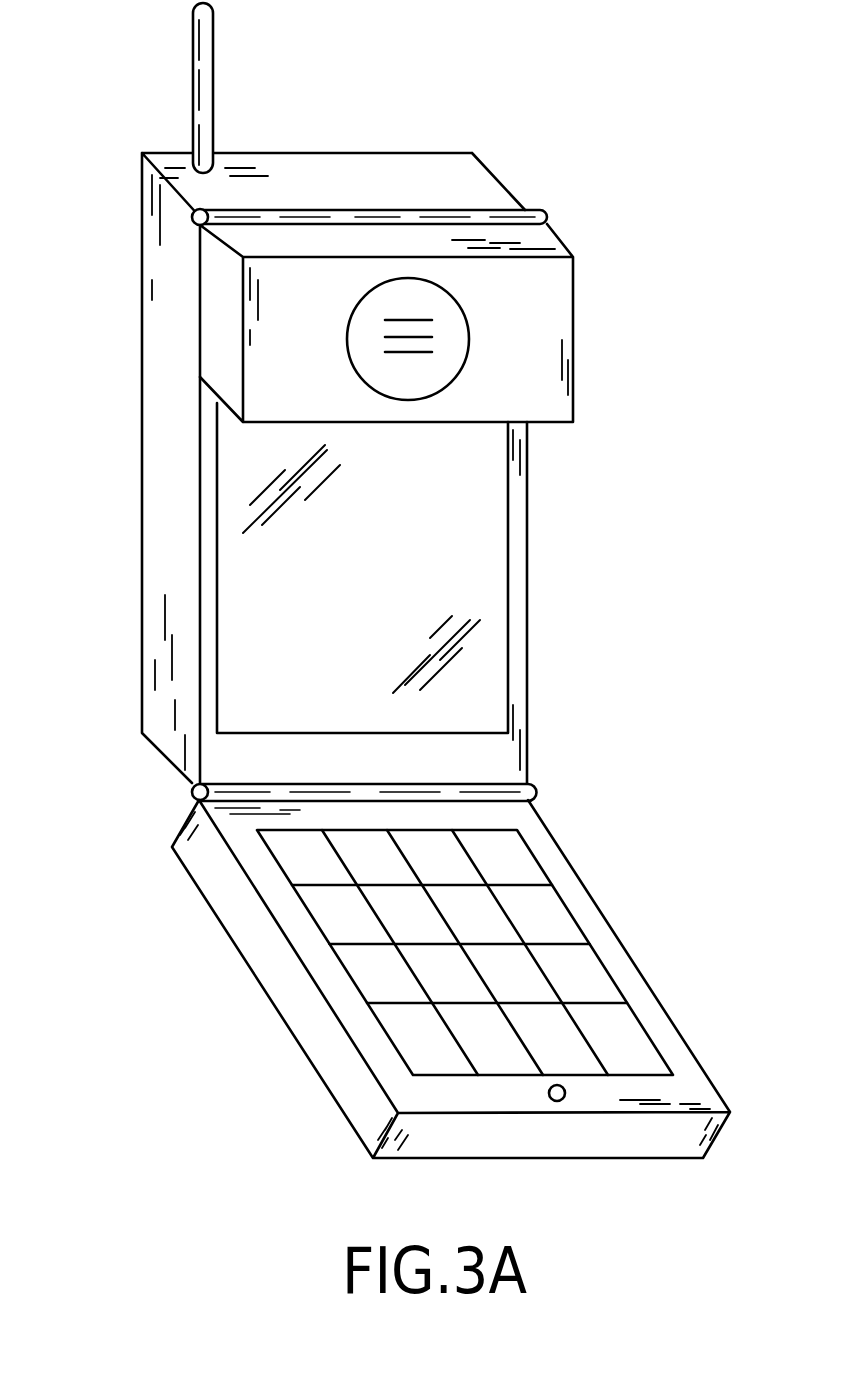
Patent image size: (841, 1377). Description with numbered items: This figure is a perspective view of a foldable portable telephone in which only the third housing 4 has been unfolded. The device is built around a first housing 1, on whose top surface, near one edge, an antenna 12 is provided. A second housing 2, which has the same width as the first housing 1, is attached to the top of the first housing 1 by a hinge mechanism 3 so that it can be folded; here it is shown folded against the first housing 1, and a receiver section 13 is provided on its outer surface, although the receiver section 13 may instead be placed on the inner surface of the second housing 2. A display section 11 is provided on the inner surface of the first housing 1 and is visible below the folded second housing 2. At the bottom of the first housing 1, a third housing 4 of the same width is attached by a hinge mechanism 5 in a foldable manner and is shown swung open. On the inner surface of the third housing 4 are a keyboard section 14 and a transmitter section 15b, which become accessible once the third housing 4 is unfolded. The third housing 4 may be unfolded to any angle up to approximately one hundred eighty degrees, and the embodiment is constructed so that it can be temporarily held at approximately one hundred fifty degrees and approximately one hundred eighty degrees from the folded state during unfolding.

The first housing 1 is at (160, 482).
The second housing 2 is at (548, 292).
The hinge mechanism 3 is at (420, 210).
The third housing 4 is at (607, 938).
The hinge mechanism 5 is at (193, 797).
The display section 11 is at (498, 630).
The antenna 12 is at (213, 67).
The receiver section 13 is at (447, 387).
The keyboard section 14 is at (332, 927).
The transmitter section 15b is at (552, 1101).